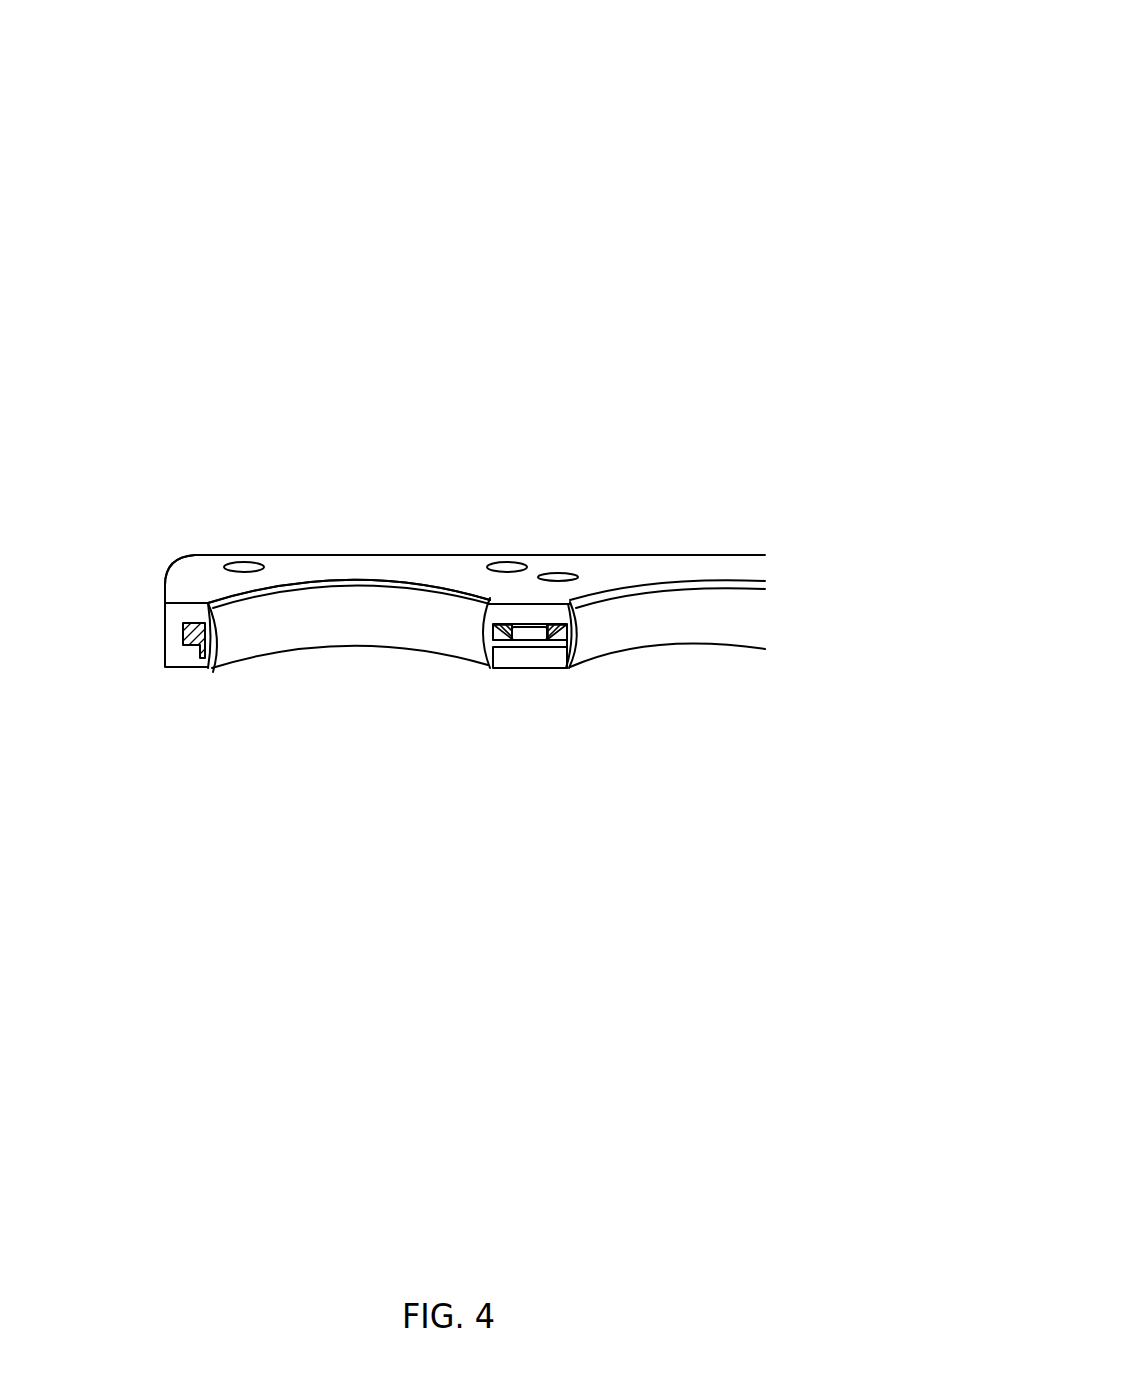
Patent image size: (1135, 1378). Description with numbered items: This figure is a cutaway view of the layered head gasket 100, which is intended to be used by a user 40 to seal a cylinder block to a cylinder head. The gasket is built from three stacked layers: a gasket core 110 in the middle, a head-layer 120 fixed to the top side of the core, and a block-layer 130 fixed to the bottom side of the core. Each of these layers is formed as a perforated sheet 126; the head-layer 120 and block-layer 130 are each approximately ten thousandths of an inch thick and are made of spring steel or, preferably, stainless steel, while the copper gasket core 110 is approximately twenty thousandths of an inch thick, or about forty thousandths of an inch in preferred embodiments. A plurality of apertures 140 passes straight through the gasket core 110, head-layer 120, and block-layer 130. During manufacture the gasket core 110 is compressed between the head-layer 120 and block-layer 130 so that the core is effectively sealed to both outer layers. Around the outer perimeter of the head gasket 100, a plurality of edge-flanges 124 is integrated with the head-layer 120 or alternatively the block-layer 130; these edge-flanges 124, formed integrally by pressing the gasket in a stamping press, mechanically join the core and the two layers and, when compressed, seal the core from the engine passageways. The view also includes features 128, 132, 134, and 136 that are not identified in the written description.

The head gasket 100 is at (826, 60).
The rounded end corner 128 is at (175, 567).
The plurality of edge-flanges 124 is at (167, 667).
The plurality of apertures 140 is at (238, 566).
The head-layer 120 is at (340, 587).
The user 40 is at (508, 565).
The perforated sheet 126 is at (538, 562).
The gasket core 110 is at (507, 637).
The hatched insert 134 is at (547, 630).
The recess side wall 132 is at (575, 628).
The block-layer 130 is at (512, 658).
The block corner 136 is at (565, 648).